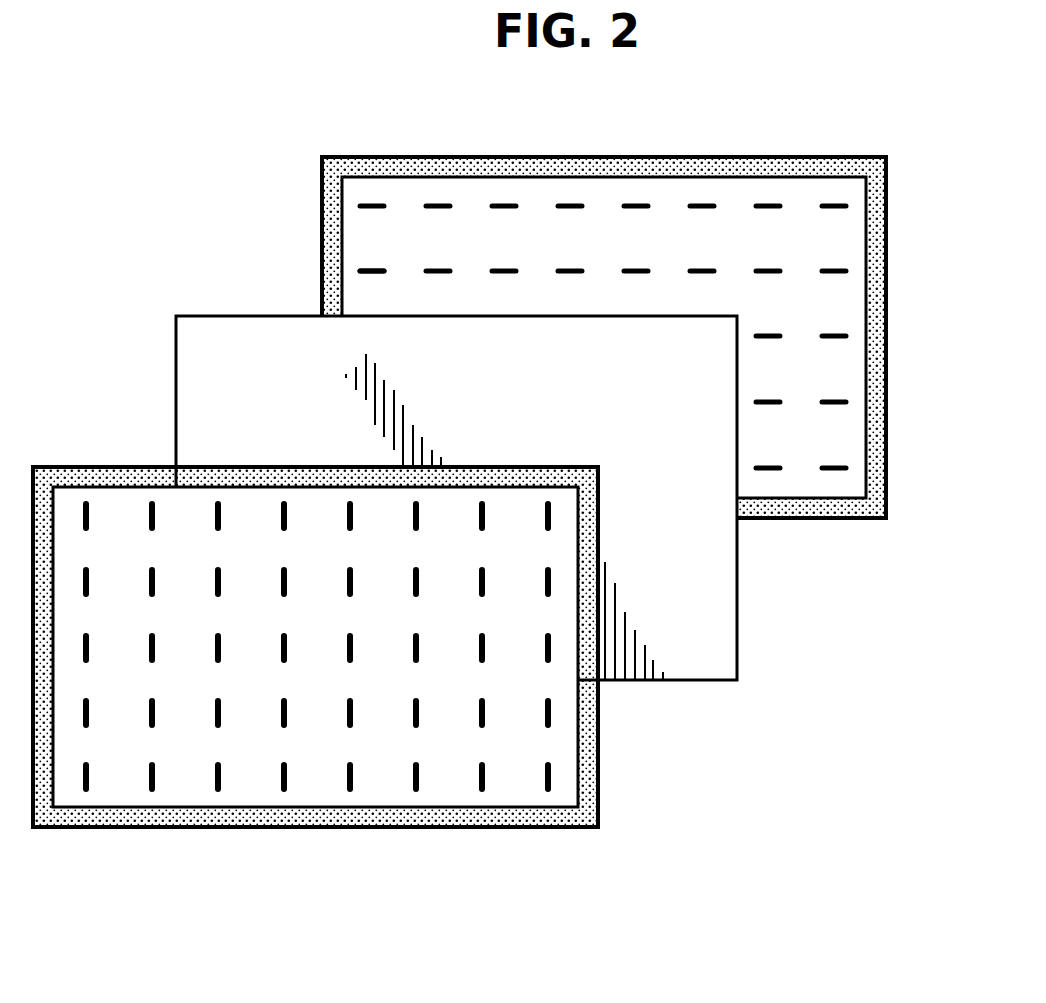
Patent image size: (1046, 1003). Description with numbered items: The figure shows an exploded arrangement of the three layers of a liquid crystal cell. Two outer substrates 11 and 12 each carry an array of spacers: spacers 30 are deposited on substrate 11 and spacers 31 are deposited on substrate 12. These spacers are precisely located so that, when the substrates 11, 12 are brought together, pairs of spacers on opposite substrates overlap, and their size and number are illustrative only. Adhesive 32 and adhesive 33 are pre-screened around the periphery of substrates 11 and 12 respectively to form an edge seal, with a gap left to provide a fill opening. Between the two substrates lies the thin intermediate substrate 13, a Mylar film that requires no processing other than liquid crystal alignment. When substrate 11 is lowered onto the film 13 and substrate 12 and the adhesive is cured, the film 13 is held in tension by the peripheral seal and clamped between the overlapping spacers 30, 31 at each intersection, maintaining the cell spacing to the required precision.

The substrate 11 is at (366, 703).
The substrate 12 is at (541, 316).
The thin intermediate substrate 13 is at (215, 384).
The spacers 30 is at (550, 712).
The spacers 31 is at (368, 273).
The adhesive 32 is at (318, 818).
The adhesive 33 is at (327, 176).